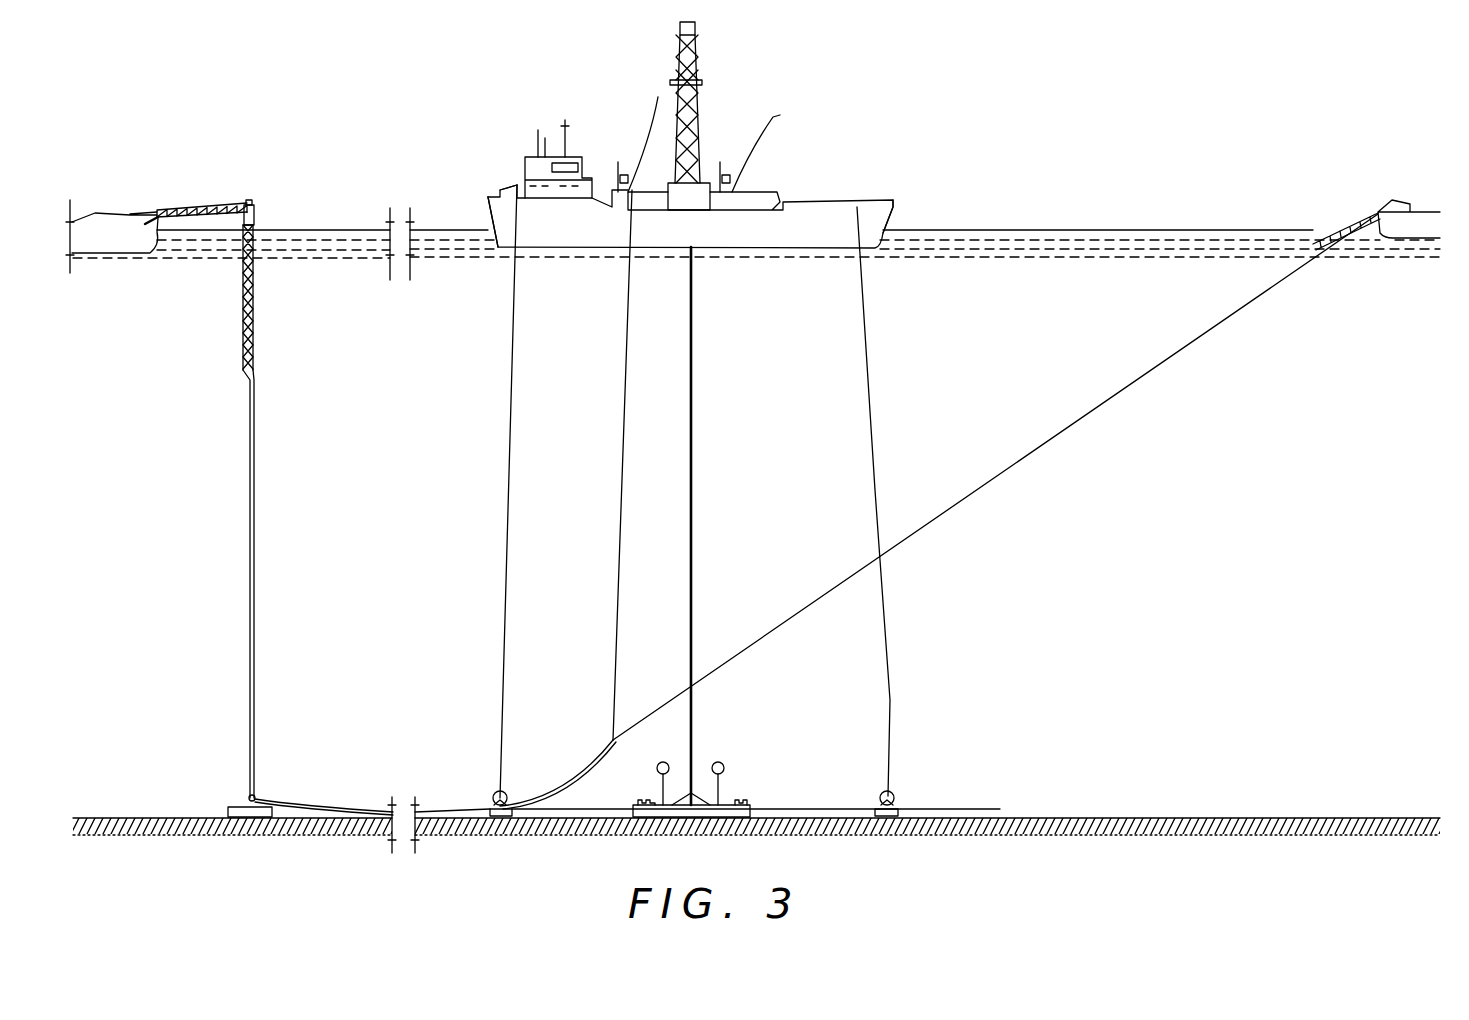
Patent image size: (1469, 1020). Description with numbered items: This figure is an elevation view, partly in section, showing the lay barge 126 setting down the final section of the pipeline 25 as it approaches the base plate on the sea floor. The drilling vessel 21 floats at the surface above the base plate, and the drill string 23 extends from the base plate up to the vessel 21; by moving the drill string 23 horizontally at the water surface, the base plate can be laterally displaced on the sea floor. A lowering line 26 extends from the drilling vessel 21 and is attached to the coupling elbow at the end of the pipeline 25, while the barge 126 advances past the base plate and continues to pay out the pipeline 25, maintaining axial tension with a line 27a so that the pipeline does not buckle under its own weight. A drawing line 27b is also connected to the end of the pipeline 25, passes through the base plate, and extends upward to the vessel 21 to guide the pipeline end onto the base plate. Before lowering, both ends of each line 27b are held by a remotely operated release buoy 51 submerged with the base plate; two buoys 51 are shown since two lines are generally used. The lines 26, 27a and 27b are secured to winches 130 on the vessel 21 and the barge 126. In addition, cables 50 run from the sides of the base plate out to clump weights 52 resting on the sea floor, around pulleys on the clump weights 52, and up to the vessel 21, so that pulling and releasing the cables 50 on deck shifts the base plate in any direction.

The drilling vessel 21 is at (740, 240).
The drill string 23 is at (692, 418).
The pipeline 25 is at (602, 750).
The lowering line 26 is at (618, 608).
The line 27a is at (1015, 460).
The drawing line 27b is at (722, 800).
The cables 50 is at (498, 670).
The release buoy 51 is at (718, 762).
The clump weights 52 is at (482, 800).
The lay barge 126 is at (1380, 212).
The winches 130 is at (500, 190).